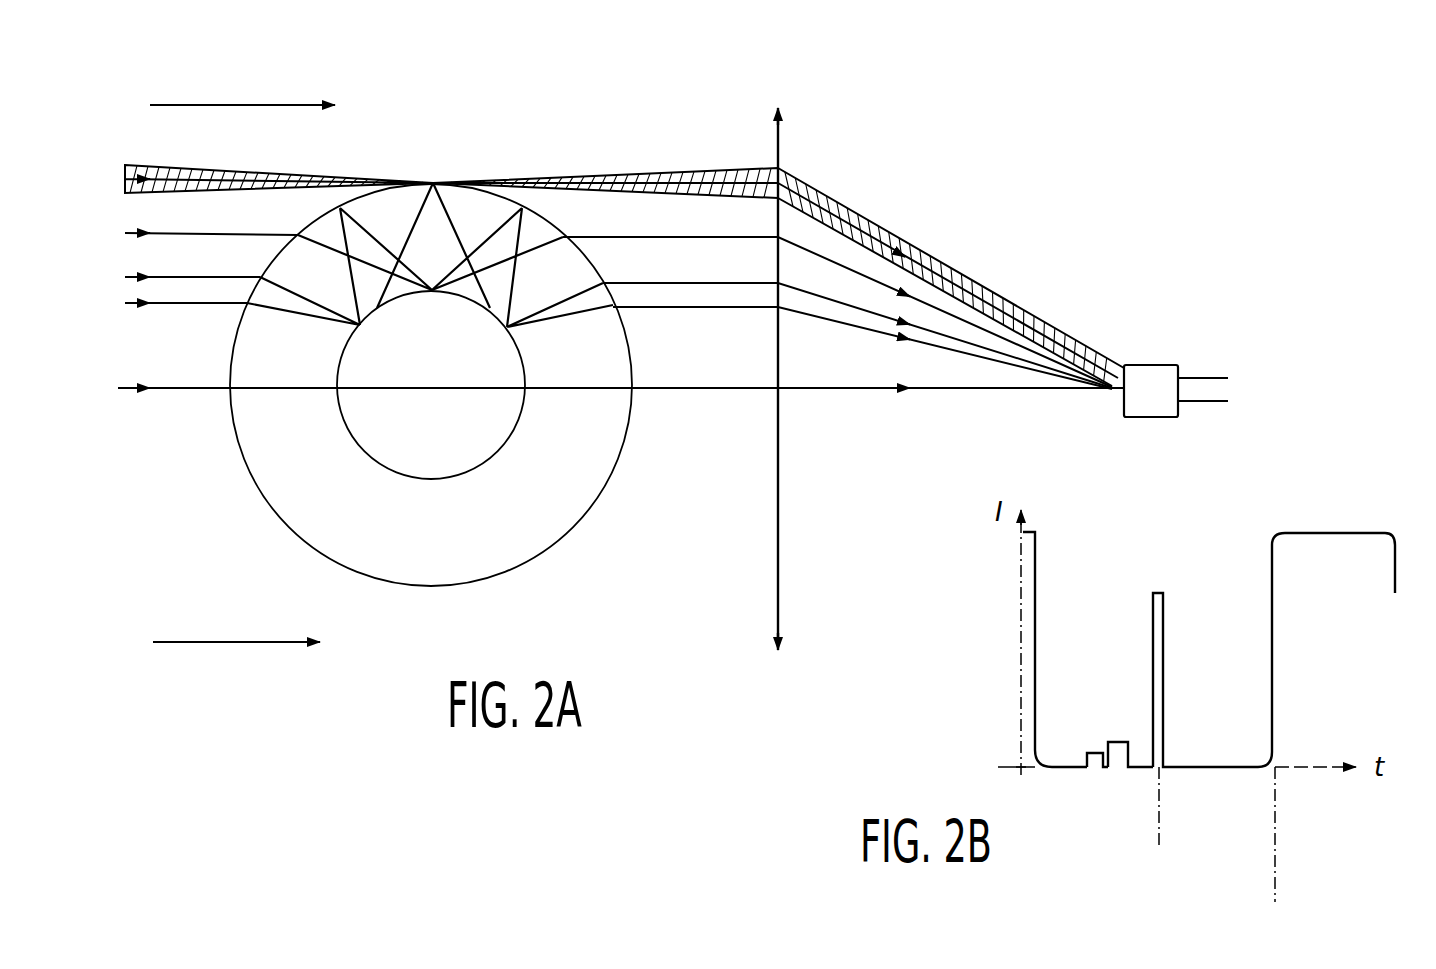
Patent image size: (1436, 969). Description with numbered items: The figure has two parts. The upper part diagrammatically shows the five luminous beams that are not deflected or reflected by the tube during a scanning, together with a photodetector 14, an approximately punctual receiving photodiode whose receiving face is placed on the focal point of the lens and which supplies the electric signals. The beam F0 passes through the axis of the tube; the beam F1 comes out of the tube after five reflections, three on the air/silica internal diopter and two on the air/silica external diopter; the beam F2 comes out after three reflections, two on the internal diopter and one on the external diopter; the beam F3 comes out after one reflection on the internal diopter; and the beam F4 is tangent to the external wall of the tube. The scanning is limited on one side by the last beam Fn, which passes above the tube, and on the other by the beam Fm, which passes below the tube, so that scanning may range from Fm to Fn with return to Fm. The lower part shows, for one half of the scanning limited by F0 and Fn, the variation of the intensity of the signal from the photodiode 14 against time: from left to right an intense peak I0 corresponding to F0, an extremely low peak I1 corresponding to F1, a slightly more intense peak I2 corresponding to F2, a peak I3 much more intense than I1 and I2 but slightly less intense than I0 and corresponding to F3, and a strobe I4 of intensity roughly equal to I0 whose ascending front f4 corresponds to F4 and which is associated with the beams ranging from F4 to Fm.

In FIG. 2A, the photodetector 14 is at (1157, 373).
In FIG. 2A, the beam passing through the tube axis F0 is at (713, 389).
In FIG. 2A, the beam emerging after five reflections F1 is at (713, 307).
In FIG. 2A, the beam emerging after three reflections F2 is at (742, 283).
In FIG. 2A, the beam emerging after one reflection F3 is at (713, 237).
In FIG. 2A, the beam tangent to the external wall F4 is at (713, 182).
In FIG. 2A, the last beam of the scanning Fn is at (242, 123).
In FIG. 2A, the beam passing below the tube Fm is at (236, 624).
In FIG. 2B, the intense peak I0 is at (1030, 528).
In FIG. 2B, the extremely low intensity peak I1 is at (1094, 752).
In FIG. 2B, the peak corresponding to F2 I2 is at (1118, 742).
In FIG. 2B, the peak corresponding to F3 I3 is at (1161, 592).
In FIG. 2B, the strobe I4 is at (1366, 531).
In FIG. 2B, the ascending front of the strobe f4 is at (1273, 641).